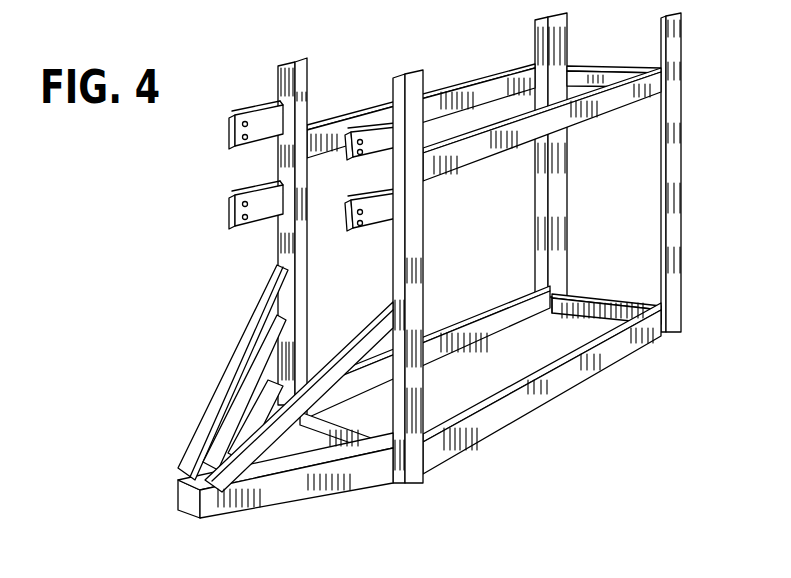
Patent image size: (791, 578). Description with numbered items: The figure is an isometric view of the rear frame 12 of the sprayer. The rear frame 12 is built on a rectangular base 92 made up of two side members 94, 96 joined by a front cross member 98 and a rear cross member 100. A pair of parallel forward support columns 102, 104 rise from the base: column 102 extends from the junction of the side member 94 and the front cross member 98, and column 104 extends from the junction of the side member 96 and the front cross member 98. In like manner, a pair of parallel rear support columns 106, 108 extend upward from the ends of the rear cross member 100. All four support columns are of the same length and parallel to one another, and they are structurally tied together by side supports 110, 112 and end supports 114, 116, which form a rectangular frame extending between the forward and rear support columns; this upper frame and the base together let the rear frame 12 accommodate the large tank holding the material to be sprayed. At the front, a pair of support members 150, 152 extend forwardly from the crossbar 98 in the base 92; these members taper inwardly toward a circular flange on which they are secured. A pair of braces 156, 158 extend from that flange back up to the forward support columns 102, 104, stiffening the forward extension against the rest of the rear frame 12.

The rear frame 12 is at (484, 264).
The rectangular base 92 is at (486, 407).
The side member 94 is at (603, 363).
The side member 96 is at (488, 335).
The front cross member 98 is at (360, 430).
The rear cross member 100 is at (590, 302).
The forward support column 102 is at (425, 288).
The forward support column 104 is at (277, 82).
The rear support column 106 is at (674, 117).
The rear support column 108 is at (540, 183).
The side support 110 is at (598, 103).
The side support 112 is at (450, 93).
The end support 114 is at (590, 63).
The end support 116 is at (318, 147).
The support member 150 is at (279, 490).
The support member 152 is at (260, 402).
The brace 156 is at (360, 347).
The brace 158 is at (263, 305).